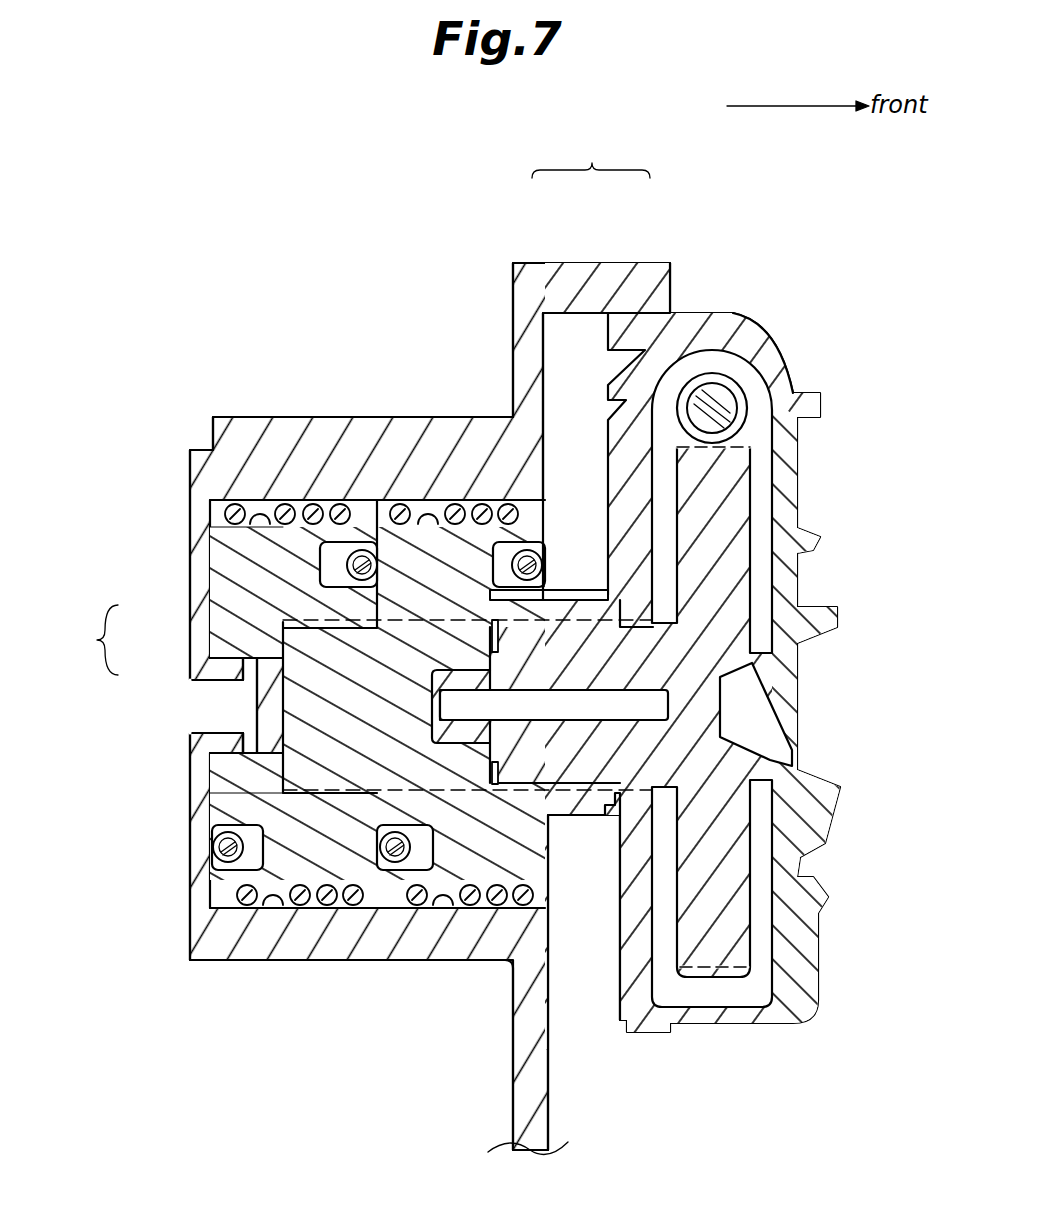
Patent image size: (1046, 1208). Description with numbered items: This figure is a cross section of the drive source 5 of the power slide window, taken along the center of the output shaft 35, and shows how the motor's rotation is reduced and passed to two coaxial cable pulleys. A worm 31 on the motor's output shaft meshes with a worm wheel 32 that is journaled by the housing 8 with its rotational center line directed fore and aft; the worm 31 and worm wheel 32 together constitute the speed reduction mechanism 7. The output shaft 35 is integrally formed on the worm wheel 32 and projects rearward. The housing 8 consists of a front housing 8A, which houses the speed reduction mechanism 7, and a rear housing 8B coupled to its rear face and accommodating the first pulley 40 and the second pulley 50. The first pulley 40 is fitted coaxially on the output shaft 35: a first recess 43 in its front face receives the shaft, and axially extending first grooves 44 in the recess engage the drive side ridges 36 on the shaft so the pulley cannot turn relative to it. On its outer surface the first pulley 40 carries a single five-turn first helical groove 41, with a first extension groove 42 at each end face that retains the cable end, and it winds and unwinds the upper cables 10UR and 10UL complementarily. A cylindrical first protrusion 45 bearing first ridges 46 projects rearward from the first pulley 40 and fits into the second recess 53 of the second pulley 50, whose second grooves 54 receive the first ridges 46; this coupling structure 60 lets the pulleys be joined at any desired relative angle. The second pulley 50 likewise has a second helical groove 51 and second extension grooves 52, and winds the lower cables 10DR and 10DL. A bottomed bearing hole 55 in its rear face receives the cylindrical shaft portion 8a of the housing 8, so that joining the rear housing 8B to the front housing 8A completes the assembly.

The drive source 5 is at (740, 212).
The speed reduction mechanism 7 is at (758, 437).
The housing 8 is at (591, 152).
The front housing 8A is at (642, 262).
The rear housing 8B is at (558, 262).
The shaft portion 8a is at (213, 680).
The worm 31 is at (715, 398).
The worm wheel 32 is at (750, 505).
The output shaft 35 is at (550, 767).
The drive side ridges 36 is at (610, 810).
The first pulley 40 is at (427, 543).
The first helical groove 41 is at (457, 917).
The first extension groove 42 is at (457, 505).
The first recess 43 is at (552, 600).
The first grooves 44 is at (500, 630).
The first protrusion 45 is at (250, 690).
The first ridges 46 is at (283, 790).
The second pulley 50 is at (273, 497).
The second helical groove 51 is at (280, 907).
The second extension groove 52 is at (270, 553).
The second recess 53 is at (288, 632).
The second grooves 54 is at (283, 617).
The bearing hole 55 is at (243, 743).
The coupling structure 60 is at (92, 640).
The lower cable on the right side 10DR is at (335, 548).
The upper cable on the right side 10UR is at (523, 555).
The lower cable on the left side 10DL is at (212, 847).
The upper cable on the left side 10UL is at (380, 920).